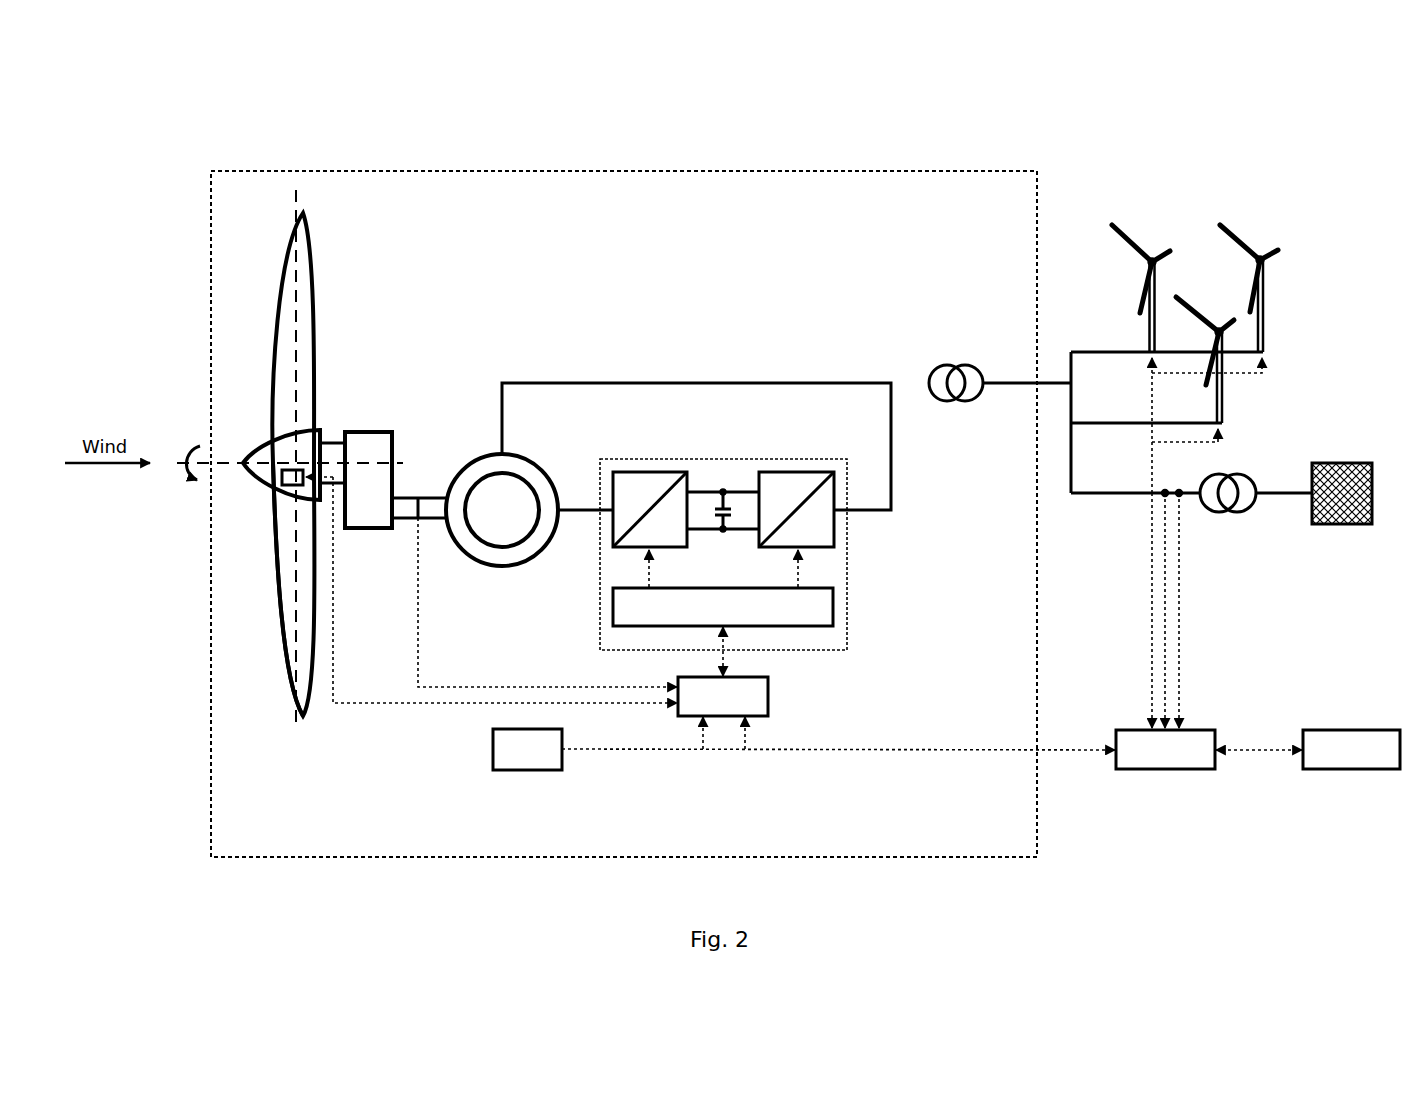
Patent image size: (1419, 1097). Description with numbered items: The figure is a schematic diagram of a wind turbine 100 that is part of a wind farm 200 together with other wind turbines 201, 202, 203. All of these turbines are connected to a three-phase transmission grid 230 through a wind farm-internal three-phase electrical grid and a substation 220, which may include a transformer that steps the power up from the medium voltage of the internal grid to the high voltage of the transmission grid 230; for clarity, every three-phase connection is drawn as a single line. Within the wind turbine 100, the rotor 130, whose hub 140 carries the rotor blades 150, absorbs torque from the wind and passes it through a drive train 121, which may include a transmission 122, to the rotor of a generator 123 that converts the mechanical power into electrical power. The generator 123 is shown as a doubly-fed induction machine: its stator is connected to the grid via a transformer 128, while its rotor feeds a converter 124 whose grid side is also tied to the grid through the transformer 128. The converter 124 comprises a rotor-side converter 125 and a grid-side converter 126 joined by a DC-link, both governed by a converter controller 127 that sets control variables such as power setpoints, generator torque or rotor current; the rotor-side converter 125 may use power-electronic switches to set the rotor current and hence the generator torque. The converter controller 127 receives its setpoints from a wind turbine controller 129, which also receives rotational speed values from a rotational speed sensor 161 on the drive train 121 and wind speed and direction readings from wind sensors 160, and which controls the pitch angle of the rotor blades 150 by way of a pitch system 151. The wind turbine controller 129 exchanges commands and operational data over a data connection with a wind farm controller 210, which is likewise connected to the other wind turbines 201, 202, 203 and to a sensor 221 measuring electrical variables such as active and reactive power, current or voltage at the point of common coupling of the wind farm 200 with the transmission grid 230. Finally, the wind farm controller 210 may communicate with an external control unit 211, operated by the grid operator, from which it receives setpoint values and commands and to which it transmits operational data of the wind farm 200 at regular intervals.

The wind turbine 100 is at (600, 170).
The drive train 121 is at (356, 550).
The transmission 122 is at (387, 430).
The generator 123 is at (482, 453).
The converter 124 is at (738, 548).
The rotor-side converter 125 is at (648, 470).
The grid-side converter 126 is at (803, 470).
The converter controller 127 is at (610, 607).
The transformer 128 is at (957, 360).
The wind turbine controller 129 is at (772, 704).
The rotor 130 is at (274, 280).
The hub 140 is at (262, 430).
The rotor blades 150 is at (272, 597).
The pitch system 151 is at (280, 481).
The wind sensors 160 is at (510, 773).
The rotational speed sensor 161 is at (424, 495).
The wind farm 200 is at (1080, 130).
The wind turbine 201 is at (1156, 240).
The wind turbine 202 is at (1216, 312).
The wind turbine 203 is at (1270, 240).
The wind farm controller 210 is at (1132, 773).
The external control unit 211 is at (1310, 773).
The substation 220 is at (1218, 520).
The sensor 221 is at (1160, 498).
The transmission grid 230 is at (1333, 530).